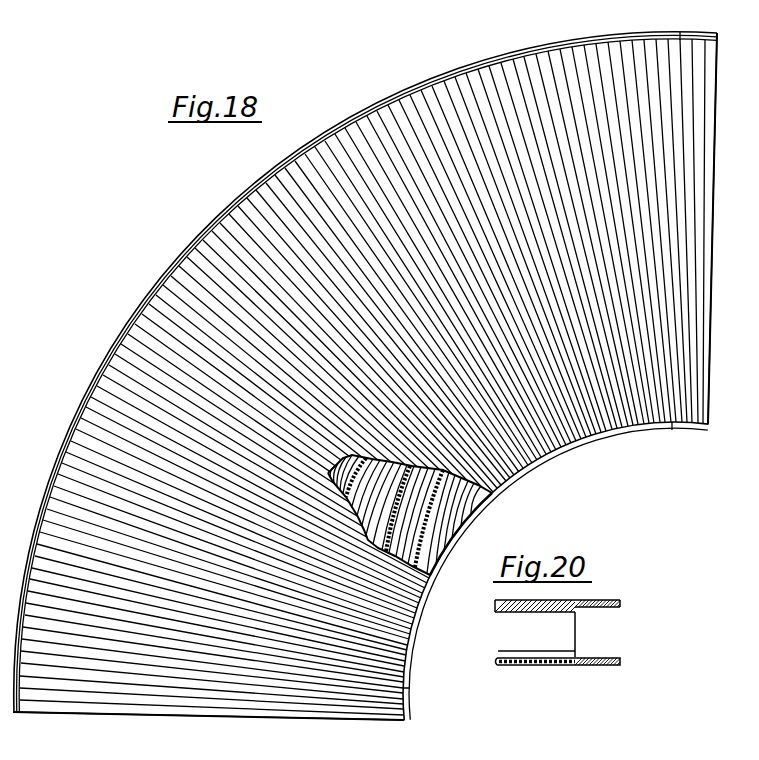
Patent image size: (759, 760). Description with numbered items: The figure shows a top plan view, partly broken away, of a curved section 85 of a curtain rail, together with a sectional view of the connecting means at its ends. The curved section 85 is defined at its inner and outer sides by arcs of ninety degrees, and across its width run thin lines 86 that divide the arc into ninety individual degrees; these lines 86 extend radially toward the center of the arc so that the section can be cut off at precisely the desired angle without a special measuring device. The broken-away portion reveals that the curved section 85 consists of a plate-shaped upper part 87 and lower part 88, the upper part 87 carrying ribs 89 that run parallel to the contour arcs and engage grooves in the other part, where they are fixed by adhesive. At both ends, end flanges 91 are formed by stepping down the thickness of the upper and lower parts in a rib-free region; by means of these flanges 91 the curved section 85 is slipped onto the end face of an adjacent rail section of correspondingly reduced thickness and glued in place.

In FIG. 18, the curved section 85 is at (172, 192).
In FIG. 18, the thin lines 86 is at (197, 298).
In FIG. 20, the upper part 87 is at (500, 595).
In FIG. 18, the lower part 88 is at (367, 356).
In FIG. 20, the lower part 88 is at (505, 672).
In FIG. 18, the ribs 89 is at (448, 514).
In FIG. 18, the end flanges 91 is at (698, 34).
In FIG. 20, the end flanges 91 is at (610, 658).